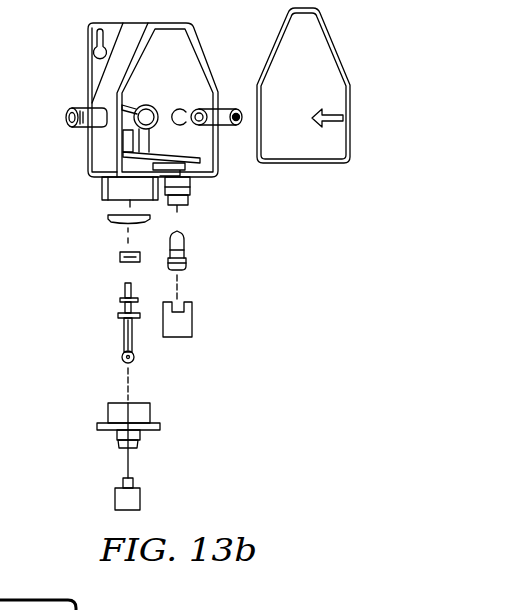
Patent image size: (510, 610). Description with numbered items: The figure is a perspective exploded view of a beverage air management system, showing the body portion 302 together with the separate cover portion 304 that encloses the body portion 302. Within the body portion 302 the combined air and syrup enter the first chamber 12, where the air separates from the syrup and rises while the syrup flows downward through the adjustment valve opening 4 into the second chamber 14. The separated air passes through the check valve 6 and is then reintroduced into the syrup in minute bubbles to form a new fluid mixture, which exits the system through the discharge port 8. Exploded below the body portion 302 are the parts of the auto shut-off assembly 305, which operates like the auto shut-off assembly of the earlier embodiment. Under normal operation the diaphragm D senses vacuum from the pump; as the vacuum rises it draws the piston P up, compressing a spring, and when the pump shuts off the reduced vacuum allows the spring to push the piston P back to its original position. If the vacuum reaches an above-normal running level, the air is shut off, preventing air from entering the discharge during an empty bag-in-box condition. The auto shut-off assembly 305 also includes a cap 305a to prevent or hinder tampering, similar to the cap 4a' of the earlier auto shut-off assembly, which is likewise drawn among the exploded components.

The first chamber 12 is at (193, 77).
The body portion 302 is at (95, 150).
The discharge port 8 is at (78, 107).
The second chamber 14 is at (100, 188).
The check valve 6 is at (243, 128).
The cover portion 304 is at (292, 165).
The diaphragm D is at (118, 223).
The adjustment valve opening 4 is at (186, 258).
The cap 4a' is at (183, 350).
The piston P is at (124, 340).
The auto shut-off assembly 305 is at (75, 220).
The cap 305a is at (140, 493).